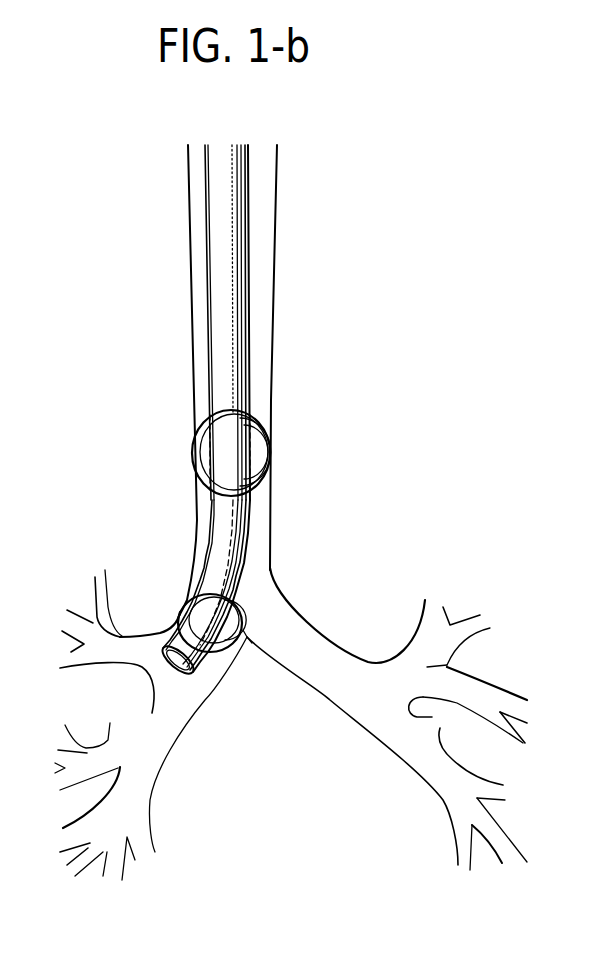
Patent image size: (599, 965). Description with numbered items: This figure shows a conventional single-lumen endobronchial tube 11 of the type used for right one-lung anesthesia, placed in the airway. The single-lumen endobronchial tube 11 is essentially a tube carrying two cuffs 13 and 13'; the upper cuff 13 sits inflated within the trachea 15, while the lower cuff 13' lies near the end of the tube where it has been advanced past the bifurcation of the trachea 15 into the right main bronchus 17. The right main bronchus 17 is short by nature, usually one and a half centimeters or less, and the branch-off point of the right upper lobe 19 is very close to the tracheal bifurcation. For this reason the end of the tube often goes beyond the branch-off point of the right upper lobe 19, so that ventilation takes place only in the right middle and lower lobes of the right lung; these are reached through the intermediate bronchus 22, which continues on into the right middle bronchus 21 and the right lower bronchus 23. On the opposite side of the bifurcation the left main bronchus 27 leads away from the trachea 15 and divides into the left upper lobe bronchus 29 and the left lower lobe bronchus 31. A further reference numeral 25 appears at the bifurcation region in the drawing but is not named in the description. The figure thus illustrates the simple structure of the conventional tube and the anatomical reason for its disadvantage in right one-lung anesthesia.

The single-lumen endobronchial tube 11 is at (228, 262).
The cuff 13 is at (263, 453).
The cuff 13' is at (197, 597).
The trachea 15 is at (262, 191).
The right main bronchus 17 is at (190, 666).
The right upper lobe 19 is at (132, 650).
The right middle bronchus 21 is at (78, 736).
The intermediate bronchus 22 is at (148, 708).
The right lower bronchus 23 is at (130, 793).
The carina 25 is at (250, 640).
The left main bronchus 27 is at (333, 667).
The left upper lobe bronchus 29 is at (450, 660).
The left lower lobe bronchus 31 is at (450, 772).